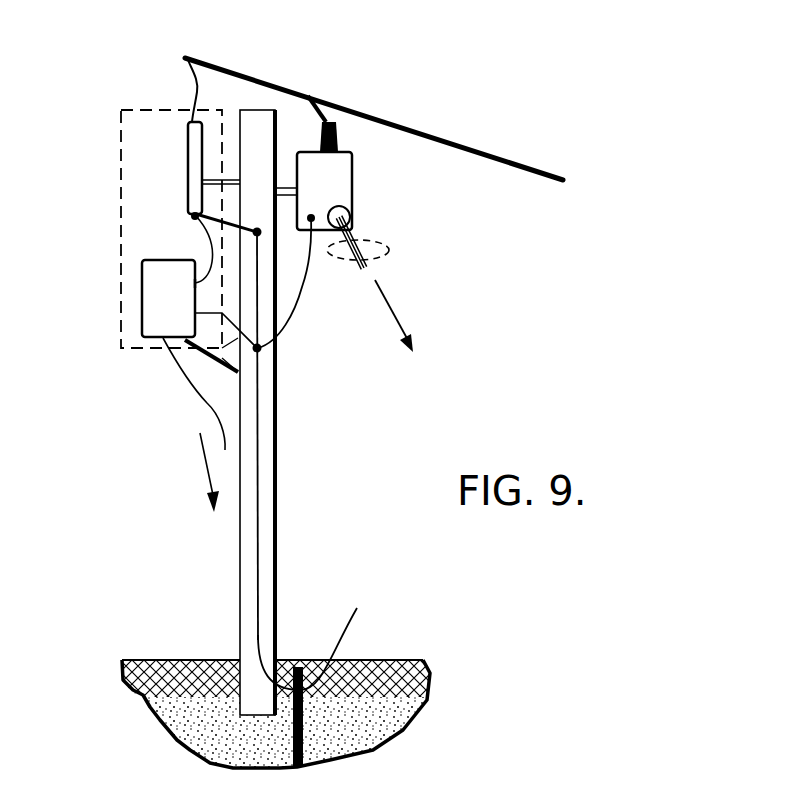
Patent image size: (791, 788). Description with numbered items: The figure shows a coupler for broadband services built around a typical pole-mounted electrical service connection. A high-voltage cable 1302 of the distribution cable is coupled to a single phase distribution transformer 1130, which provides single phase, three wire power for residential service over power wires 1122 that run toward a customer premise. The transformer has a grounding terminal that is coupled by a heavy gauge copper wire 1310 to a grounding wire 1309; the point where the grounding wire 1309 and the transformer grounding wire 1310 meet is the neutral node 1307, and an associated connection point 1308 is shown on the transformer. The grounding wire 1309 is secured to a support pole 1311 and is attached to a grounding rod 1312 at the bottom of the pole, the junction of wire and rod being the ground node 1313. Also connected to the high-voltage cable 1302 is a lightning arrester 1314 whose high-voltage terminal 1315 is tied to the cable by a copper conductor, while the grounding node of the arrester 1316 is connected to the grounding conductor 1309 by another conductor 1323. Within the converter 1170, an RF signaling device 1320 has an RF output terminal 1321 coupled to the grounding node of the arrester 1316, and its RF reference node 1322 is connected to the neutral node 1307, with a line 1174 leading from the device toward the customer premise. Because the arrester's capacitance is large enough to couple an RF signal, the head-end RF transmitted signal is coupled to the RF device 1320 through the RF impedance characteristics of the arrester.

The power wires 1122 is at (386, 245).
The single phase distribution transformer 1130 is at (354, 167).
The converter 1170 is at (143, 110).
The power line to customer premise 1174 is at (205, 408).
The high-voltage cable 1302 is at (318, 58).
The neutral node 1307 is at (258, 348).
The connection point 1308 is at (311, 218).
The grounding wire 1309 is at (258, 535).
The heavy gauge copper wire 1310 is at (298, 305).
The support pole 1311 is at (276, 468).
The grounding rod 1312 is at (332, 637).
The ground node 1313 is at (357, 665).
The lightning arrester 1314 is at (188, 152).
The high-voltage terminal of the arrester 1315 is at (192, 122).
The grounding node of the arrester 1316 is at (196, 215).
The RF signaling device 1320 is at (142, 323).
The RF output terminal 1321 is at (193, 283).
The RF reference node 1322 is at (190, 355).
The conductor 1323 is at (200, 224).